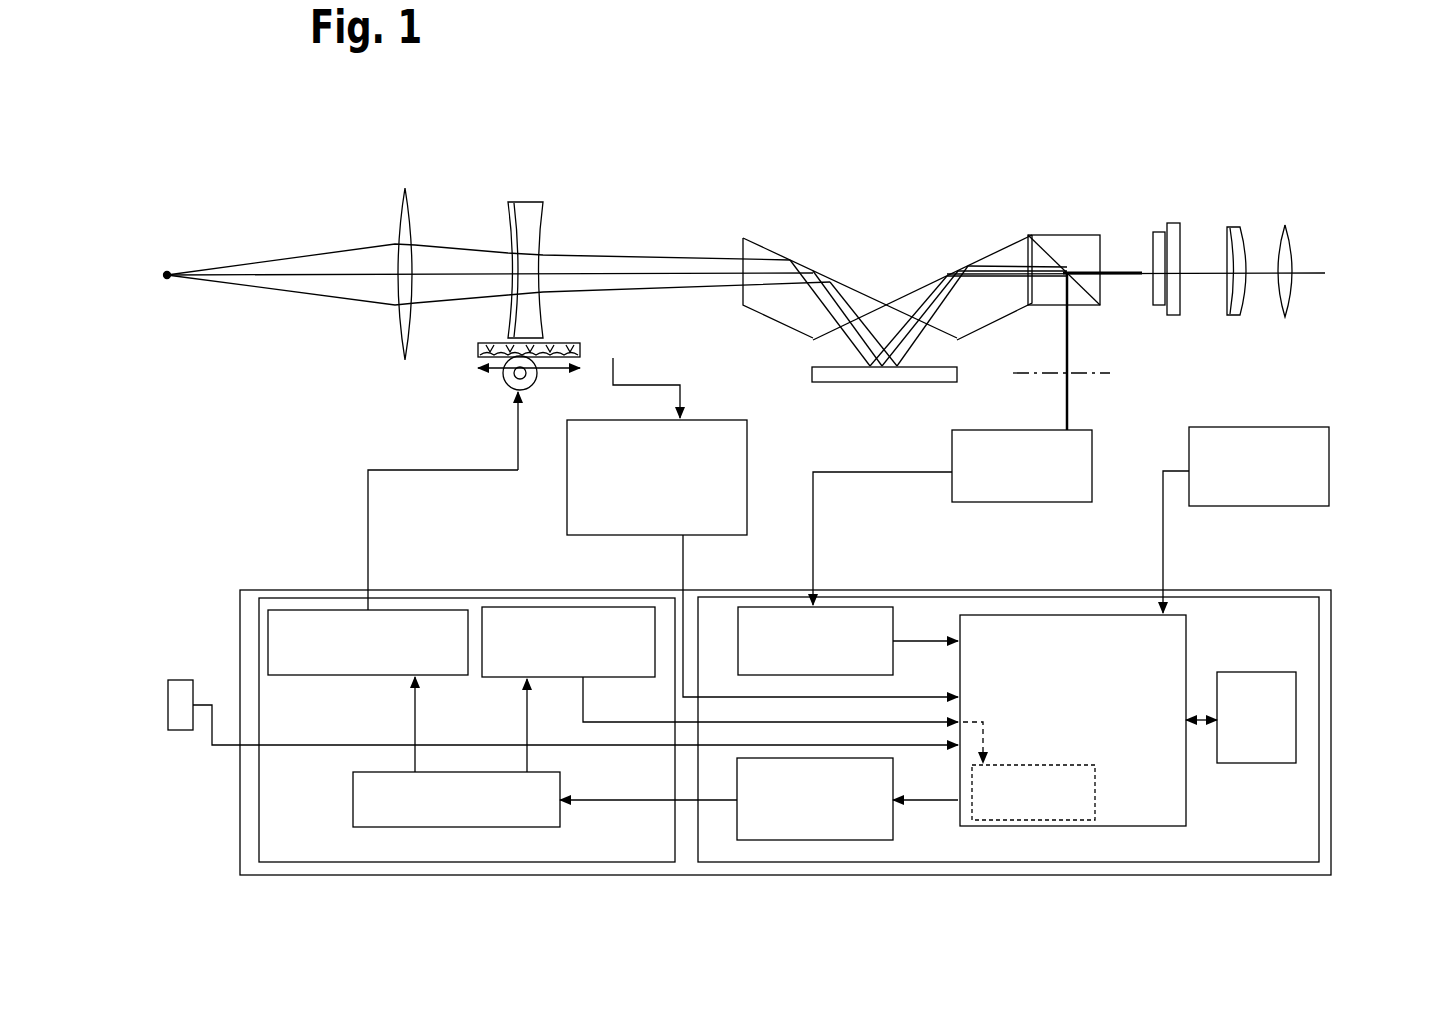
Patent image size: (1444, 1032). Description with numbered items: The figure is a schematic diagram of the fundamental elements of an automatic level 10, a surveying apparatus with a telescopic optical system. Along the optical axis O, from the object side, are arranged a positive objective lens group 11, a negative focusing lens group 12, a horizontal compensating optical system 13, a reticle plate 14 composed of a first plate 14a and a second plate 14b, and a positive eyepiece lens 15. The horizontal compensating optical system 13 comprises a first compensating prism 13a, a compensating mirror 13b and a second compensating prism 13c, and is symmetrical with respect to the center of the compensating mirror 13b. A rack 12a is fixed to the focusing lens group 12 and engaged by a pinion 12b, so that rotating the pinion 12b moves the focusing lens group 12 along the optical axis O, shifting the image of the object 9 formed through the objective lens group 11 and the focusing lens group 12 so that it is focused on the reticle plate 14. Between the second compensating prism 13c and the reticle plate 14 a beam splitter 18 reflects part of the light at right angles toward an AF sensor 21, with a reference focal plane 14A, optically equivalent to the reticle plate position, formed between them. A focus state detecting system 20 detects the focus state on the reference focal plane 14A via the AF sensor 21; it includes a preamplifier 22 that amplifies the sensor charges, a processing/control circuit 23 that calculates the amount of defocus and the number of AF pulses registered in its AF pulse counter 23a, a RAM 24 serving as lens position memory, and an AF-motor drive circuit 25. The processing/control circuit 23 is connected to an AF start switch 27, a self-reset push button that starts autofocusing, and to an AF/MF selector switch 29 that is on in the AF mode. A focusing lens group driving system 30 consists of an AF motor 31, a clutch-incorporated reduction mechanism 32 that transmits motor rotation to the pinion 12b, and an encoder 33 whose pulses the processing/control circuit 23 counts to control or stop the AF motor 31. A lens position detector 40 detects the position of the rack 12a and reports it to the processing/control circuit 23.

The object 9 is at (168, 272).
The automatic level 10 is at (616, 96).
The objective lens group 11 is at (405, 360).
The focusing lens group 12 is at (527, 202).
The rack 12a is at (580, 350).
The pinion 12b is at (538, 381).
The optical axis O is at (628, 270).
The horizontal compensating optical system 13 is at (883, 275).
The first compensating prism 13a is at (757, 240).
The compensating mirror 13b is at (860, 382).
The second compensating prism 13c is at (988, 250).
The reticle plate 14 is at (1172, 215).
The first plate 14a is at (1159, 232).
The second plate 14b is at (1178, 223).
The reference focal plane 14A is at (1098, 374).
The eyepiece lens 15 is at (1220, 215).
The beam splitter 18 is at (1066, 235).
The focus state detecting system 20 is at (727, 598).
The AF sensor 21 is at (972, 430).
The preamplifier 22 is at (738, 641).
The processing/control circuit 23 is at (1108, 825).
The AF pulse counter 23a is at (1003, 824).
The RAM 24 is at (1296, 756).
The AF-motor drive circuit 25 is at (737, 782).
The AF start switch 27 is at (1228, 427).
The AF/MF selector switch 29 is at (180, 732).
The focusing lens group driving system 30 is at (578, 598).
The AF motor 31 is at (353, 784).
The clutch-incorporated reduction mechanism 32 is at (313, 677).
The encoder 33 is at (505, 678).
The lens position detector 40 is at (708, 428).